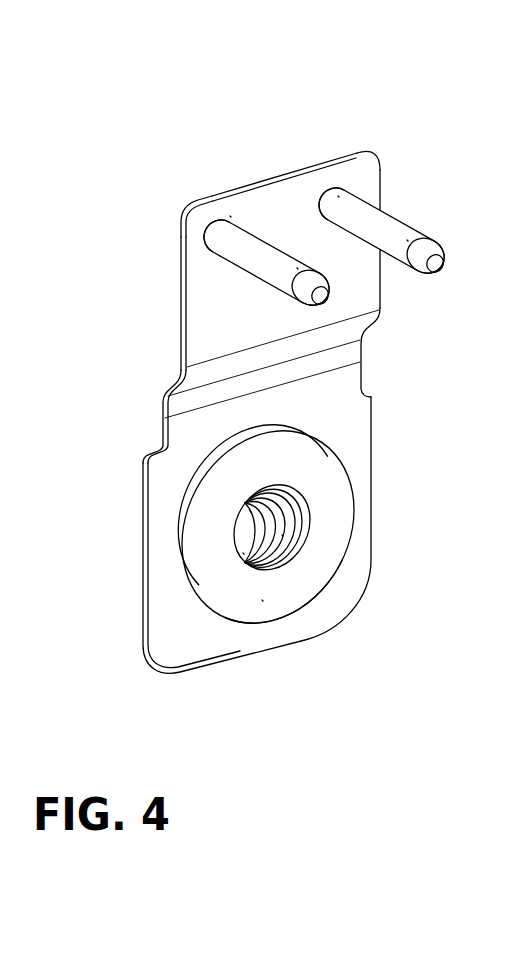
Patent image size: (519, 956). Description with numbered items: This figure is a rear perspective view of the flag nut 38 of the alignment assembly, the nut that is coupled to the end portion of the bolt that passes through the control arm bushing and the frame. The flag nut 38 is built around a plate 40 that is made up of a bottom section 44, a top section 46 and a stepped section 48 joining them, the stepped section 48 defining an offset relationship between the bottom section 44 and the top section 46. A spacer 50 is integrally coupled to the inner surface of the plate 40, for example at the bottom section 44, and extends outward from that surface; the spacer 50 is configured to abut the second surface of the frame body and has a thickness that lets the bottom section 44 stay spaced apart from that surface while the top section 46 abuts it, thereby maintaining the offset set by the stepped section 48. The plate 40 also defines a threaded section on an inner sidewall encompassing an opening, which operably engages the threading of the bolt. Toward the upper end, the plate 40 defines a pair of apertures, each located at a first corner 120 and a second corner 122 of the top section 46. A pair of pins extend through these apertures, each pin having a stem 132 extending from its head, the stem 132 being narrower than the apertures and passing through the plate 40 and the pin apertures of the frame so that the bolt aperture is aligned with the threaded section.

The flag nut 38 is at (285, 396).
The plate 40 is at (283, 373).
The bottom section 44 is at (358, 558).
The top section 46 is at (293, 221).
The stepped section 48 is at (167, 390).
The spacer 50 is at (322, 523).
The first corner 120 is at (366, 168).
The second corner 122 is at (190, 221).
The stem 132 is at (341, 198).